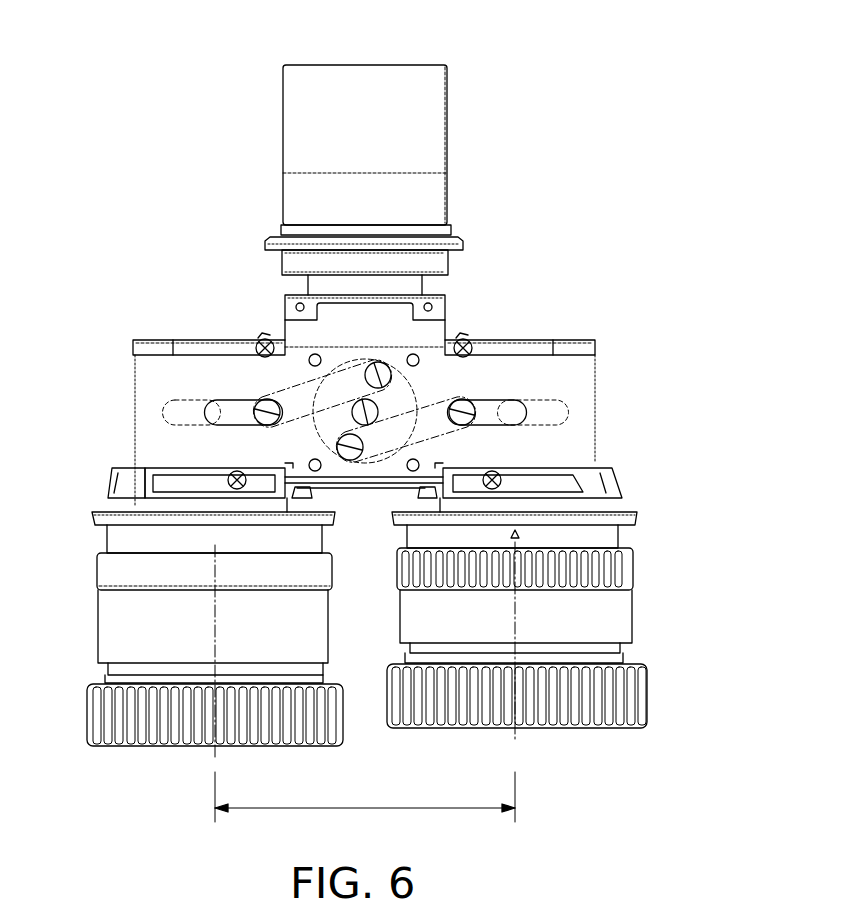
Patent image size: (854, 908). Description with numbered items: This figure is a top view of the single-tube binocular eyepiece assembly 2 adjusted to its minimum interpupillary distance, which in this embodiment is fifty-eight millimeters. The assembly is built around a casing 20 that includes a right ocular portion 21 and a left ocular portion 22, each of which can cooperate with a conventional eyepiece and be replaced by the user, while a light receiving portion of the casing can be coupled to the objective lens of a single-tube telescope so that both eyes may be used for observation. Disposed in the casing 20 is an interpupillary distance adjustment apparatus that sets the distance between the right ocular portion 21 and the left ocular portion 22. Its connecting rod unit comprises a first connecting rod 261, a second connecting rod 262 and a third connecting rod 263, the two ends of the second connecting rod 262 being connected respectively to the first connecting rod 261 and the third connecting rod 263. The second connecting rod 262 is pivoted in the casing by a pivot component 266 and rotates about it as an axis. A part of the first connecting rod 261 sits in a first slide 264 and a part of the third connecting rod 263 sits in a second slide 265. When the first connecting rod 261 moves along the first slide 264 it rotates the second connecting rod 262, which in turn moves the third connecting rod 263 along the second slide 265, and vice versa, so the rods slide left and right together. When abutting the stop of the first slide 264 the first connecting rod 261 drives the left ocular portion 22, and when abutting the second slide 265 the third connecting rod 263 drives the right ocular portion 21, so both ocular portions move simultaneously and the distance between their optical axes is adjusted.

The single-tube binocular eyepiece assembly 2 is at (89, 25).
The casing 20 is at (622, 427).
The right ocular portion 21 is at (618, 537).
The left ocular portion 22 is at (112, 538).
The first connecting rod 261 is at (295, 398).
The second connecting rod 262 is at (348, 428).
The third connecting rod 263 is at (441, 415).
The first slide 264 is at (182, 415).
The second slide 265 is at (543, 412).
The pivot component 266 is at (368, 410).